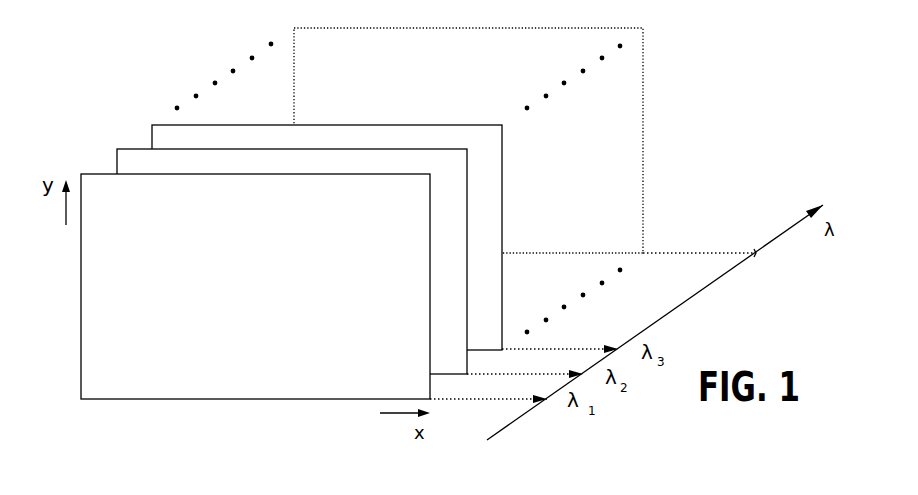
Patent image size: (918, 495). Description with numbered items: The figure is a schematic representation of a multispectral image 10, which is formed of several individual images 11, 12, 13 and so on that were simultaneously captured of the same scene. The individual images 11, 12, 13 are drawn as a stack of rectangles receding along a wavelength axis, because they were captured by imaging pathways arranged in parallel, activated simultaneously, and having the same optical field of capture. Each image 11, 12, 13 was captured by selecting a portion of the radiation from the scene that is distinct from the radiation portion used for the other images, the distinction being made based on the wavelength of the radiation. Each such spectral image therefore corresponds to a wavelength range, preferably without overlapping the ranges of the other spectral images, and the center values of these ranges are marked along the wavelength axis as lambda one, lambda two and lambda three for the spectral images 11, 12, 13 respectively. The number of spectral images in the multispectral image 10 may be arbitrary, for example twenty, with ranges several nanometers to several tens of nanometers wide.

The multispectral image 10 is at (341, 245).
The individual image 11 is at (95, 173).
The individual image 12 is at (130, 148).
The individual image 13 is at (165, 125).